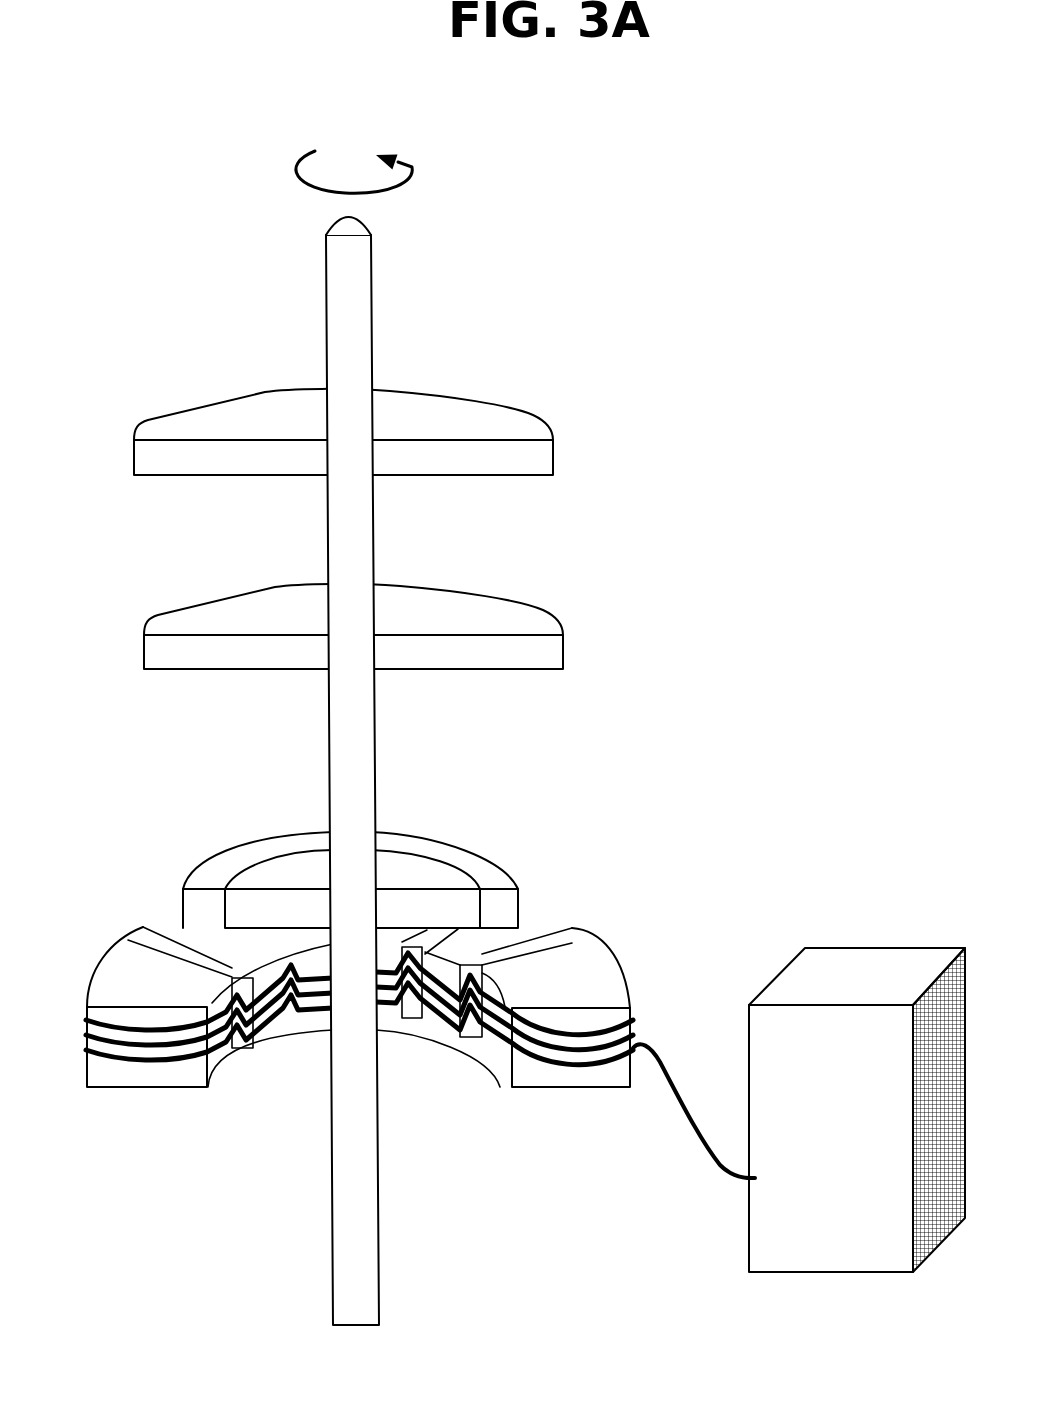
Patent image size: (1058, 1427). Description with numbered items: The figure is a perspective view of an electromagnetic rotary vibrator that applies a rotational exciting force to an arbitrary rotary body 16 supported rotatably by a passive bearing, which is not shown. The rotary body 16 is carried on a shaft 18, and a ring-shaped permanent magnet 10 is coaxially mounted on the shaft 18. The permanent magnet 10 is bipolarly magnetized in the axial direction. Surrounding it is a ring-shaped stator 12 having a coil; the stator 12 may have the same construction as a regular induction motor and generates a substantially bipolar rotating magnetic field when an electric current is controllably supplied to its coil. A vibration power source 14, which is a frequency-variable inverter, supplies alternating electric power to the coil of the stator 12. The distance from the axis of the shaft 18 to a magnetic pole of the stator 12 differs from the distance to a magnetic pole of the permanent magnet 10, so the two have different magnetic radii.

The ring-shaped permanent magnet 10 is at (497, 895).
The ring-shaped stator 12 is at (582, 1075).
The vibration power source 14 is at (865, 960).
The rotary body 16 is at (570, 460).
The shaft 18 is at (370, 1270).